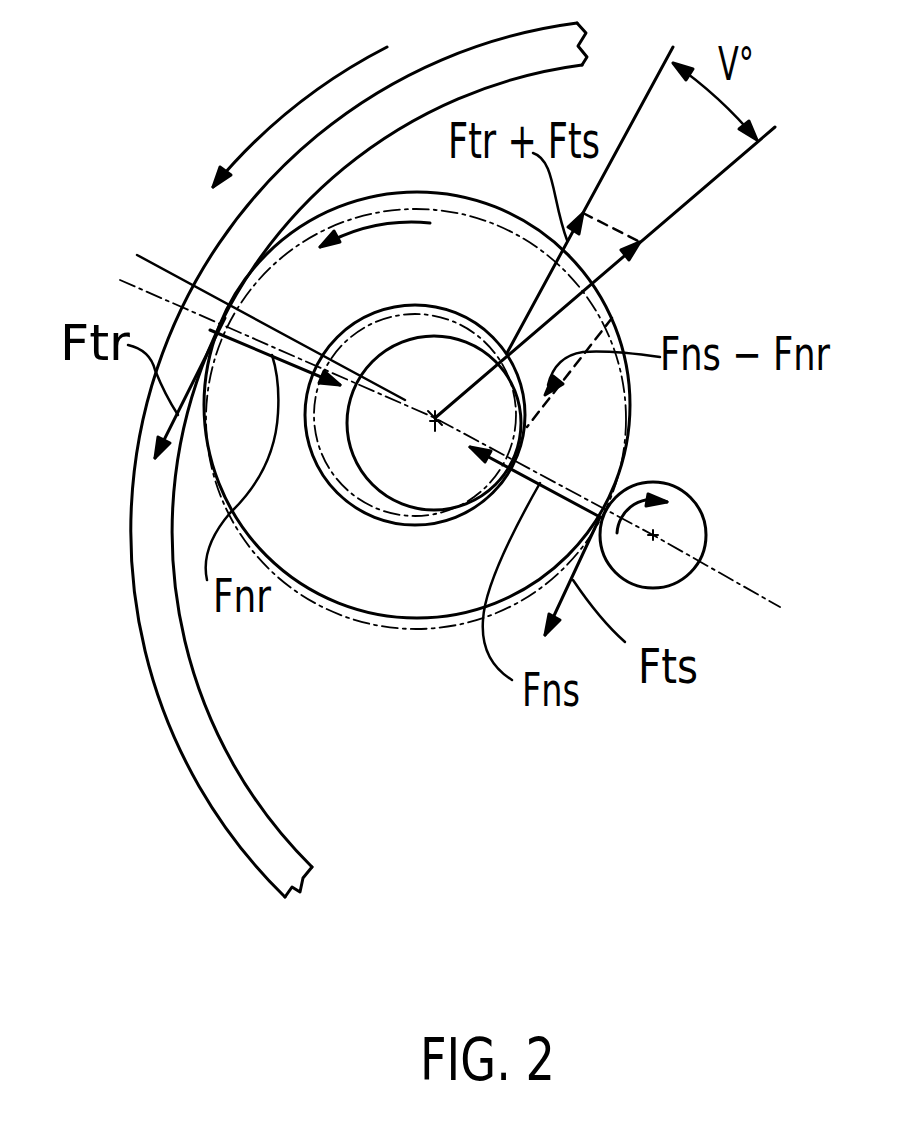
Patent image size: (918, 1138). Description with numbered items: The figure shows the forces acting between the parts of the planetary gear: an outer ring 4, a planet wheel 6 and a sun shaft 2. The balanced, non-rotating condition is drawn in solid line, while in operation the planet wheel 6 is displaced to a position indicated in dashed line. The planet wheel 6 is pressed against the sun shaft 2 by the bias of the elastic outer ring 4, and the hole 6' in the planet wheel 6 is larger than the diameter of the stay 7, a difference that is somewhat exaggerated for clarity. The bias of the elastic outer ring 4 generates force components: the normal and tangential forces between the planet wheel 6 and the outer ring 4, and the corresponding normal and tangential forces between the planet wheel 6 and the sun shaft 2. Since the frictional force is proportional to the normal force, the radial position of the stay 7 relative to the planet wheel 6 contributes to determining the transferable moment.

The sun shaft 2 is at (690, 525).
The outer ring 4 is at (172, 705).
The planet wheel 6 is at (417, 452).
The hole 6' is at (400, 497).
The stay 7 is at (420, 467).